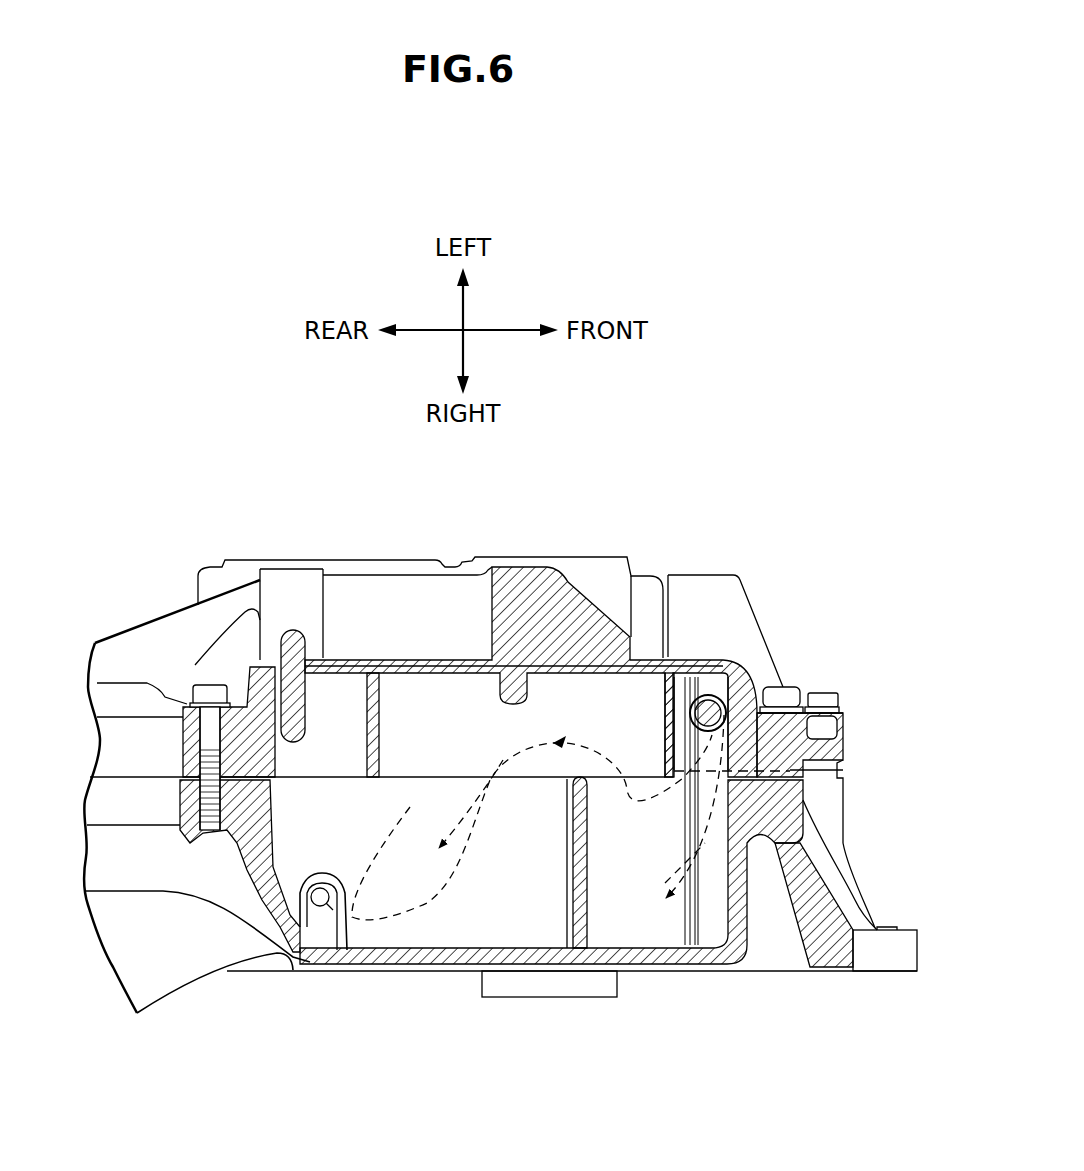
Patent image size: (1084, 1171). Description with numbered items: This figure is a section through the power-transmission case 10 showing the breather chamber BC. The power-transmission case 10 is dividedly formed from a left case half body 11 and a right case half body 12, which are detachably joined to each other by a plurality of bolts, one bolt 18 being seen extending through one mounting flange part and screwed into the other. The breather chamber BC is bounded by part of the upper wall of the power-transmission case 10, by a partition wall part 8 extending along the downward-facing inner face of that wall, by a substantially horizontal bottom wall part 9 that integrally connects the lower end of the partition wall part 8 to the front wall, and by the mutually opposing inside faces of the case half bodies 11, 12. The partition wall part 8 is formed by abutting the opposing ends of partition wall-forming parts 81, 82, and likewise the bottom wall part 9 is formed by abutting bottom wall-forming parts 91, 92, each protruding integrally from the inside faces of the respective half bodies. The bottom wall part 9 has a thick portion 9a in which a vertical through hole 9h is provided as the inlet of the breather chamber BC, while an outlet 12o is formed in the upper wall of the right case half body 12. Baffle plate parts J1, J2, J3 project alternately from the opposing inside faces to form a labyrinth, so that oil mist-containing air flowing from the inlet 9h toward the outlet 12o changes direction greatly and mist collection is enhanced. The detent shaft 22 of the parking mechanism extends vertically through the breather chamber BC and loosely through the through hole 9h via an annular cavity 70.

The power-transmission case 10 is at (733, 480).
The left case half body 11 is at (606, 600).
The right case half body 12 is at (854, 882).
The outlet 12o is at (320, 906).
The bolt 18 is at (824, 695).
The detent shaft 22 is at (690, 711).
The annular cavity 70 is at (702, 697).
The partition wall part 8 is at (556, 1052).
The partition wall-forming part 81 is at (542, 757).
The partition wall-forming part 82 is at (450, 927).
The bottom wall part 9 is at (828, 1025).
The bottom wall-forming part 91 is at (783, 842).
The bottom wall-forming part 92 is at (710, 905).
The thick portion 9a is at (665, 831).
The through hole 9h is at (720, 700).
The breather chamber BC is at (428, 668).
The baffle plate part J1 is at (665, 752).
The baffle plate part J2 is at (588, 856).
The baffle plate part J3 is at (373, 716).